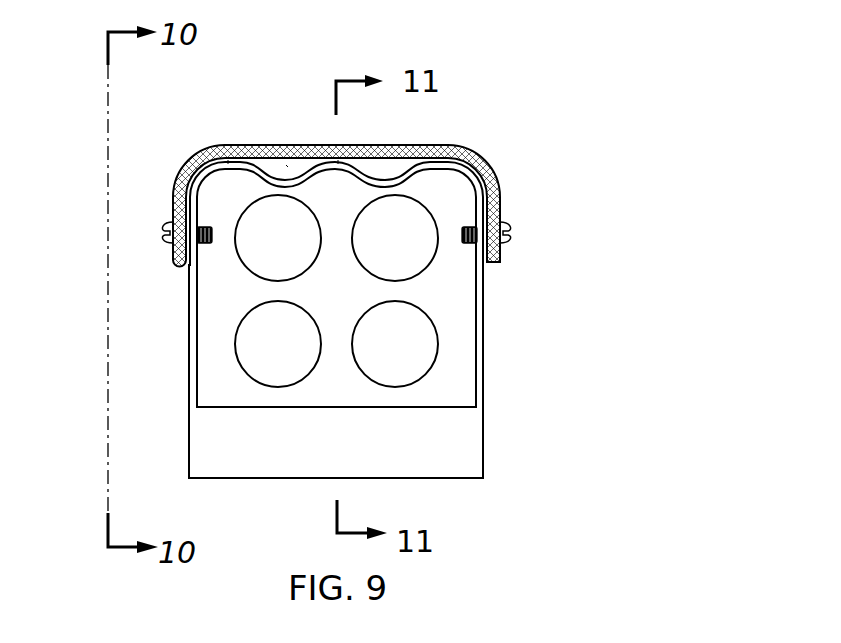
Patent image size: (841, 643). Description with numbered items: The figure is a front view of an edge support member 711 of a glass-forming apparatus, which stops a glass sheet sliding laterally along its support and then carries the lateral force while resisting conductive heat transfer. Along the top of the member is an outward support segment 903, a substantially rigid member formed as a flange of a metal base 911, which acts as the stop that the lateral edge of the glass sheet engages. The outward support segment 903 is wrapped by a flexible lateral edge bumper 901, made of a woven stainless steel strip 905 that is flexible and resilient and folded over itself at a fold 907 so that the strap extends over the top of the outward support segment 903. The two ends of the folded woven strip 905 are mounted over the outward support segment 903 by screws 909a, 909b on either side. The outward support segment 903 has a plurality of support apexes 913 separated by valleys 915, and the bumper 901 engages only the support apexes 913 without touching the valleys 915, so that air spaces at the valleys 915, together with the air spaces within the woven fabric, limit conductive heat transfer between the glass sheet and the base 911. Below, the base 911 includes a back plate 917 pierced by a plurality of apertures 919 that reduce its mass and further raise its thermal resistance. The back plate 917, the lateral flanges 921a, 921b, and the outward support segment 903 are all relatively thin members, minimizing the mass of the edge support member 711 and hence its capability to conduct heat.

The edge support member 711 is at (514, 106).
The flexible lateral edge bumper 901 is at (179, 152).
The outward support segment 903 is at (334, 208).
The woven stainless steel strip 905 is at (440, 145).
The fold 907 is at (182, 268).
The screw 909a is at (165, 232).
The screw 909b is at (510, 232).
The base 911 is at (494, 441).
The support apexes 913 is at (228, 162).
The valleys 915 is at (287, 167).
The back plate 917 is at (463, 388).
The apertures 919 is at (278, 387).
The lateral flange 921a is at (188, 340).
The lateral flange 921b is at (483, 330).